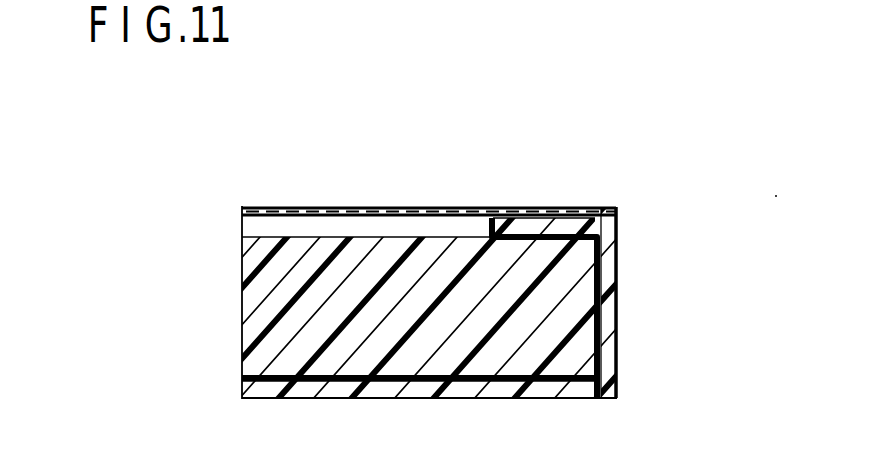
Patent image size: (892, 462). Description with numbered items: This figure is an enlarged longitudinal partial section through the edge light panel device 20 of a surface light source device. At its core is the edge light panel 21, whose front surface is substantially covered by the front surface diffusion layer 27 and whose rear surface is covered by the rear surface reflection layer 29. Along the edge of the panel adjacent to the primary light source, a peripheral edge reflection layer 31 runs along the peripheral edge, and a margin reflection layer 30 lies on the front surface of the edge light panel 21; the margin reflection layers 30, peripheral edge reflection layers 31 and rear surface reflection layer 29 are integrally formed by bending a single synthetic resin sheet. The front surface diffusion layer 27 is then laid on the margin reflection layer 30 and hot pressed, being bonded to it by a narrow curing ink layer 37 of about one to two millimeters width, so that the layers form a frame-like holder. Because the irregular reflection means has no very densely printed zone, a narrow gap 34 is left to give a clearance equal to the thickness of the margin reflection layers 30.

The edge light panel device 20 is at (603, 403).
The edge light panel 21 is at (243, 303).
The front surface diffusion layer 27 is at (340, 206).
The rear surface reflection layer 29 is at (300, 396).
The margin reflection layers 30 is at (603, 252).
The peripheral edge reflection layers 31 is at (617, 309).
The narrow gap 34 is at (258, 230).
The curing ink layer 37 is at (546, 217).